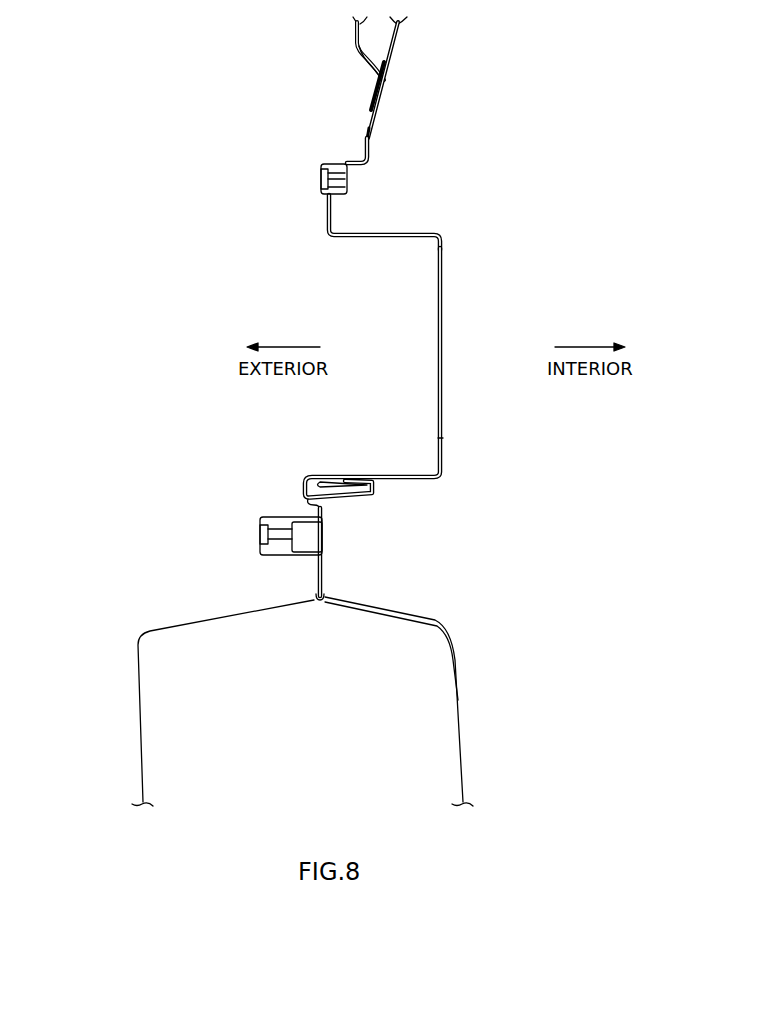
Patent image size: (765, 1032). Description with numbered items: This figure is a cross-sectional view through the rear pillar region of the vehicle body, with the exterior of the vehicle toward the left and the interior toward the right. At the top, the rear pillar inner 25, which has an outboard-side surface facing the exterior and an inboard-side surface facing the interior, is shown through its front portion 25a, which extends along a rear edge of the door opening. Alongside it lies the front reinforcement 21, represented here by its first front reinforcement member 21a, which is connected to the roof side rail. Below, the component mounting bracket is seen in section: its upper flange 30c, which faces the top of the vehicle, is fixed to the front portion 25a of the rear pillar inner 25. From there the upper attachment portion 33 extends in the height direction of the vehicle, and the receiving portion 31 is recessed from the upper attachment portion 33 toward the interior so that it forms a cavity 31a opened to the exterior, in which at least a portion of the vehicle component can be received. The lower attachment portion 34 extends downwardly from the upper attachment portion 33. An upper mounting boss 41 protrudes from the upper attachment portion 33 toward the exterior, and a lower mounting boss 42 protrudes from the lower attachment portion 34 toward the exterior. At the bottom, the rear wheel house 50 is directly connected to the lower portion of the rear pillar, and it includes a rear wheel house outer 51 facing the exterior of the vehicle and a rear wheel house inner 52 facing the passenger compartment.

The front reinforcement 21 is at (326, 44).
The first front reinforcement member 21a is at (359, 47).
The rear pillar inner 25 is at (406, 52).
The front portion 25a is at (378, 99).
The upper flange 30c is at (369, 141).
The receiving portion 31 is at (445, 328).
The cavity 31a is at (400, 333).
The upper attachment portion 33 is at (358, 211).
The lower attachment portion 34 is at (350, 571).
The upper mounting boss 41 is at (335, 163).
The lower mounting boss 42 is at (278, 551).
The rear wheel house 50 is at (117, 709).
The rear wheel house outer 51 is at (140, 743).
The rear wheel house inner 52 is at (461, 714).